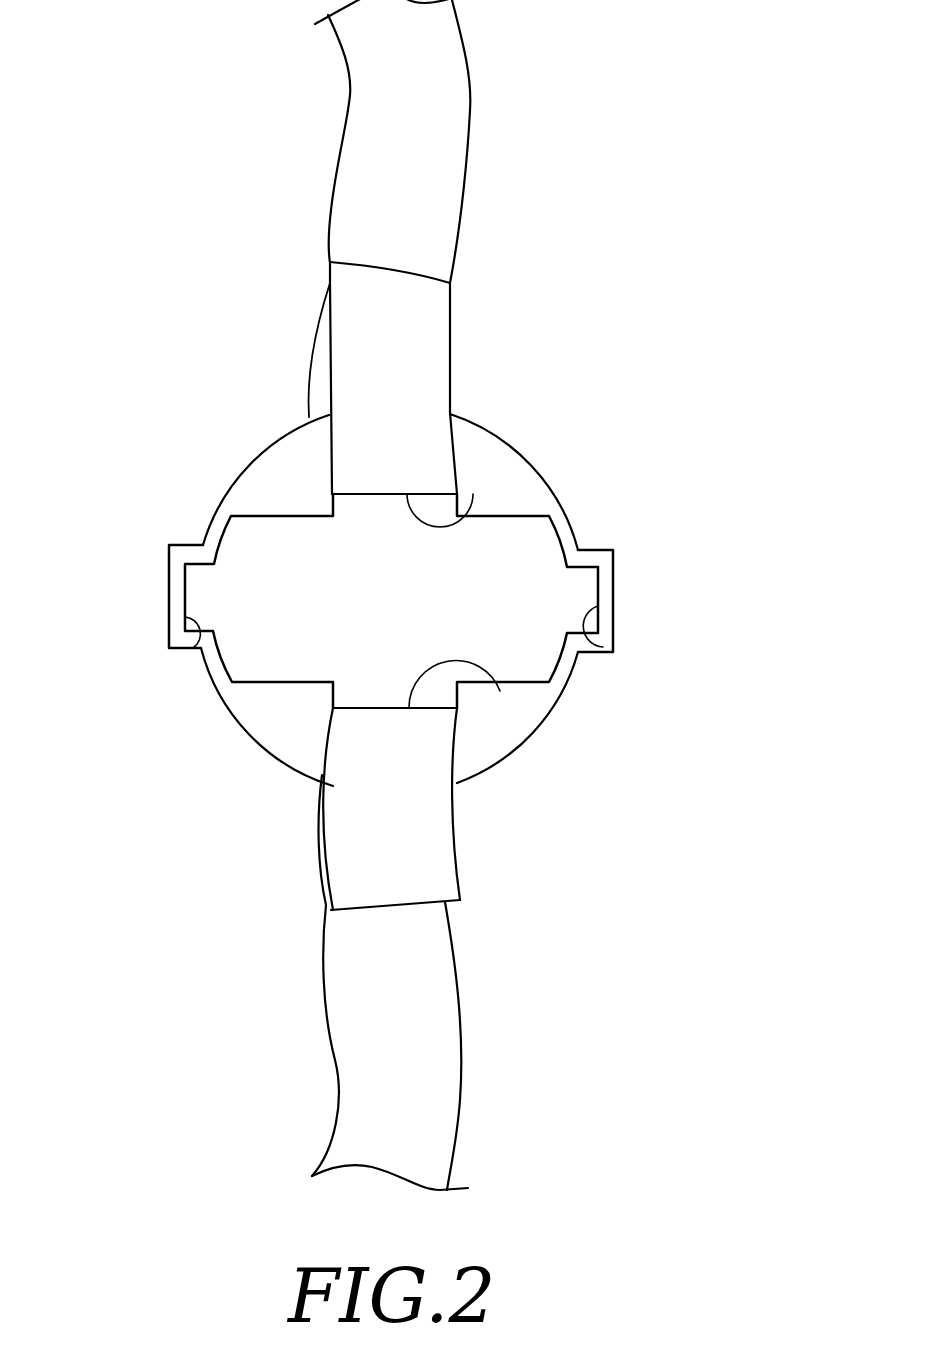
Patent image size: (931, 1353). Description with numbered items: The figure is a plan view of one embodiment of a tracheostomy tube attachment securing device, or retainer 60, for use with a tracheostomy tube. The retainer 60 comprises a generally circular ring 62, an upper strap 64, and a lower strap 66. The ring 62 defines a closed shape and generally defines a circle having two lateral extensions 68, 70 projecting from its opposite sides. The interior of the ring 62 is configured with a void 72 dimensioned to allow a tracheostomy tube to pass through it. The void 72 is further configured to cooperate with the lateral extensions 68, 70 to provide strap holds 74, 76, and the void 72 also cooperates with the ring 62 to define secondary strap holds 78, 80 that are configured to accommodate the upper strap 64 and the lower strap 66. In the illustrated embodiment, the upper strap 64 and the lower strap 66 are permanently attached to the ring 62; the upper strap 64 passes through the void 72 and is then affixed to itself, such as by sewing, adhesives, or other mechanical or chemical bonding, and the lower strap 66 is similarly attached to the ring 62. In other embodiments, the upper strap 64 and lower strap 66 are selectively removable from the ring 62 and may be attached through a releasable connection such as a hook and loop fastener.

The retainer 60 is at (618, 352).
The ring 62 is at (566, 517).
The upper strap 64 is at (432, 107).
The lower strap 66 is at (435, 963).
The lateral extension 68 is at (612, 582).
The lateral extension 70 is at (177, 598).
The void 72 is at (406, 616).
The strap hold 74 is at (613, 653).
The strap hold 76 is at (175, 650).
The secondary strap hold 78 is at (473, 494).
The secondary strap hold 80 is at (485, 672).